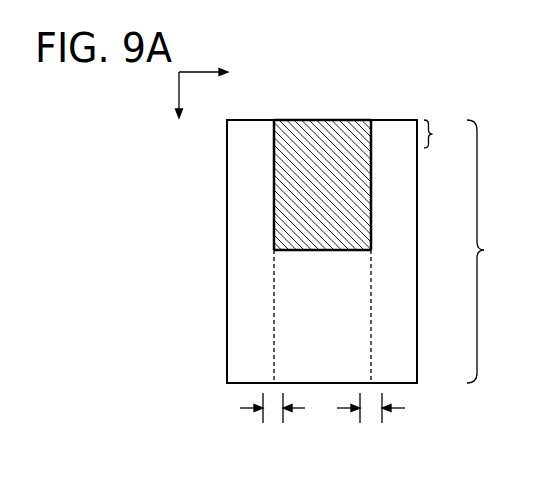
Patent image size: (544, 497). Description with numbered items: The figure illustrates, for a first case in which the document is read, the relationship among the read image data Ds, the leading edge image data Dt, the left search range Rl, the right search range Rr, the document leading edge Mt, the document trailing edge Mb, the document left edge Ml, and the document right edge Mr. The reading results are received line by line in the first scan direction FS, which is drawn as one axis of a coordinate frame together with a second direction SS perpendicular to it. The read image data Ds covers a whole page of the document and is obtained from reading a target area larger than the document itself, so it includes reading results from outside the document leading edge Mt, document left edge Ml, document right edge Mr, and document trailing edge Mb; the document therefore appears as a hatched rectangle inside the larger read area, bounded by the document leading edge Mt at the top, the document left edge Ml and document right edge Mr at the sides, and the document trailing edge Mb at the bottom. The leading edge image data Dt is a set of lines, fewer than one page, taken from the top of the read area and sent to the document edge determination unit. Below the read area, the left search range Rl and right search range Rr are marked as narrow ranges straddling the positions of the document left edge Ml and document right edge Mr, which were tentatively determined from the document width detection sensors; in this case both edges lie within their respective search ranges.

The first scan direction FS is at (220, 73).
The slow scan direction SS is at (177, 111).
The document leading edge Mt is at (325, 119).
The document right edge Mr is at (372, 168).
The document left edge Ml is at (274, 180).
The document trailing edge Mb is at (318, 252).
The leading edge image data Dt is at (443, 134).
The read image data Ds is at (492, 251).
The left search range Rl is at (272, 423).
The right search range Rr is at (371, 423).